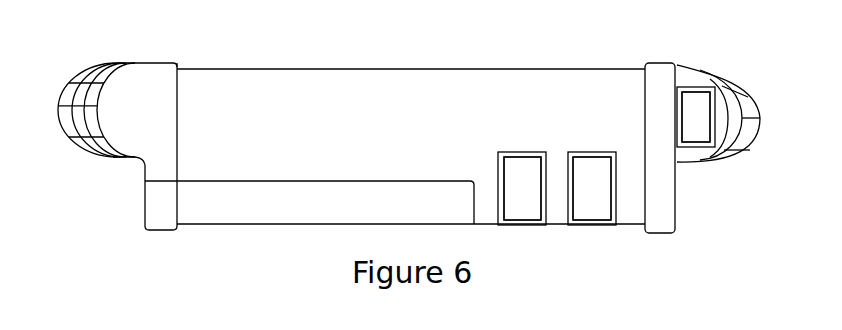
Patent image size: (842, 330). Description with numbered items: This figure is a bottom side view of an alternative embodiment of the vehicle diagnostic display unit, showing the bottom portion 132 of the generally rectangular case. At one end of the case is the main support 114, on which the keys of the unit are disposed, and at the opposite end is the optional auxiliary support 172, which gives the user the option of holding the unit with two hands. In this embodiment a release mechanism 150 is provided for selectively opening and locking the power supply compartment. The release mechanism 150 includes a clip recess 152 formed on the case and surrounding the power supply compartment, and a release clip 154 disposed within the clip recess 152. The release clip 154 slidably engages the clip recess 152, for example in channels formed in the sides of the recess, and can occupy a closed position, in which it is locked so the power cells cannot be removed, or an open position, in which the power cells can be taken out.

The bottom portion 132 is at (342, 129).
The auxiliary support 172 is at (143, 77).
The main support 114 is at (672, 75).
The release mechanism 150 is at (593, 142).
The clip recess 152 is at (523, 220).
The release clip 154 is at (595, 208).